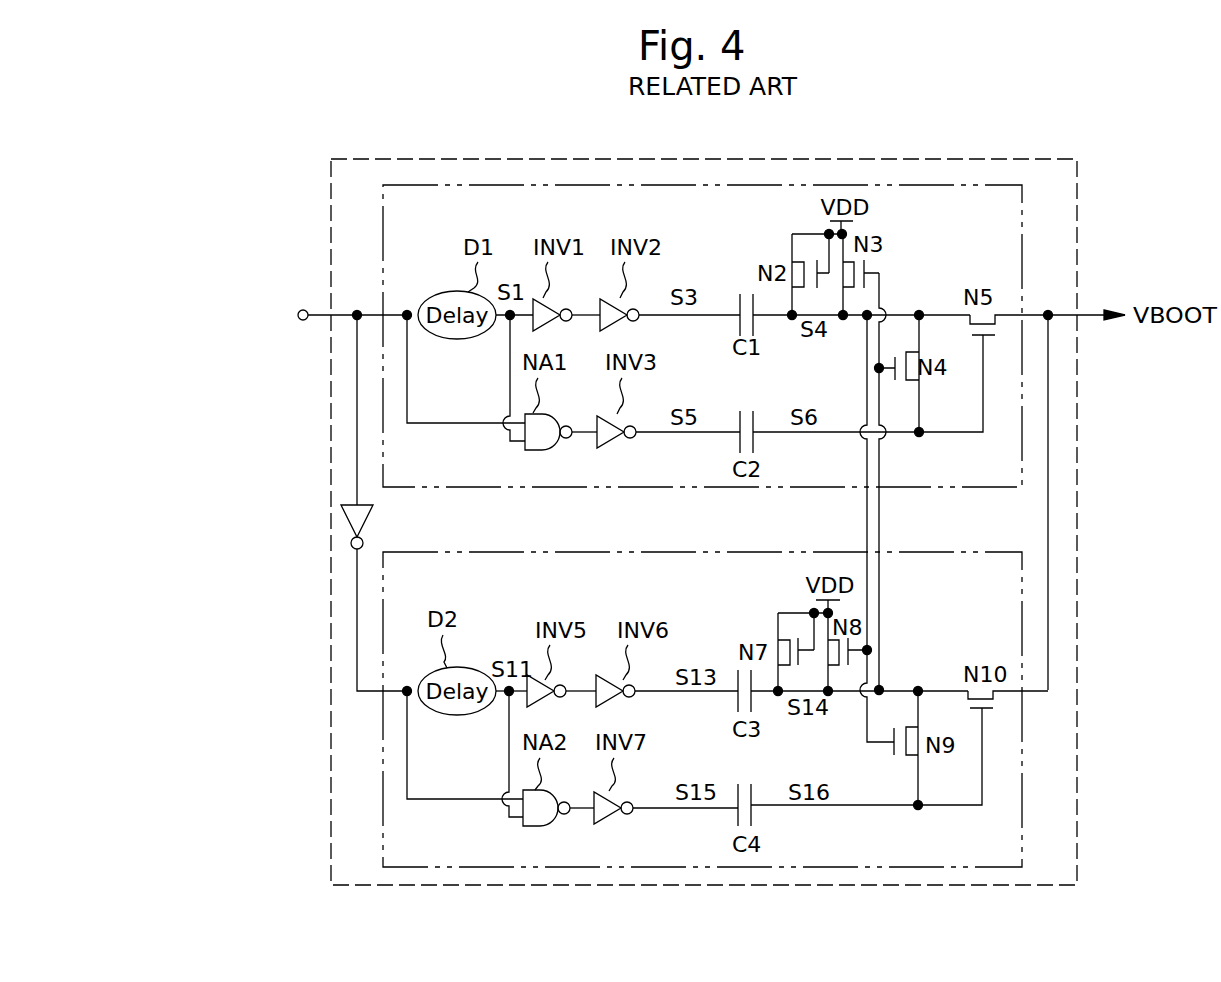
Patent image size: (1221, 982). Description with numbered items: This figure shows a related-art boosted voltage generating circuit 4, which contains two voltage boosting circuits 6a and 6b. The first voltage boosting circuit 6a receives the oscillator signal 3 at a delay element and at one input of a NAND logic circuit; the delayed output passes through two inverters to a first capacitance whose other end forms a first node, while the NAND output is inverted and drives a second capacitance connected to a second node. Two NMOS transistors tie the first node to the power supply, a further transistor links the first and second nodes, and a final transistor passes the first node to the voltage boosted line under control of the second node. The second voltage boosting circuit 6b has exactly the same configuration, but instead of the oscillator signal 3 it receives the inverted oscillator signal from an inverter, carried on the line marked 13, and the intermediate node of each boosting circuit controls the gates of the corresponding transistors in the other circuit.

The oscillator signal 3 is at (303, 310).
The boosted voltage generating circuit 4 is at (1078, 194).
The first voltage boosting circuit 6a is at (1022, 276).
The second voltage boosting circuit 6b is at (1020, 838).
The inverted oscillator signal line 13 is at (351, 577).